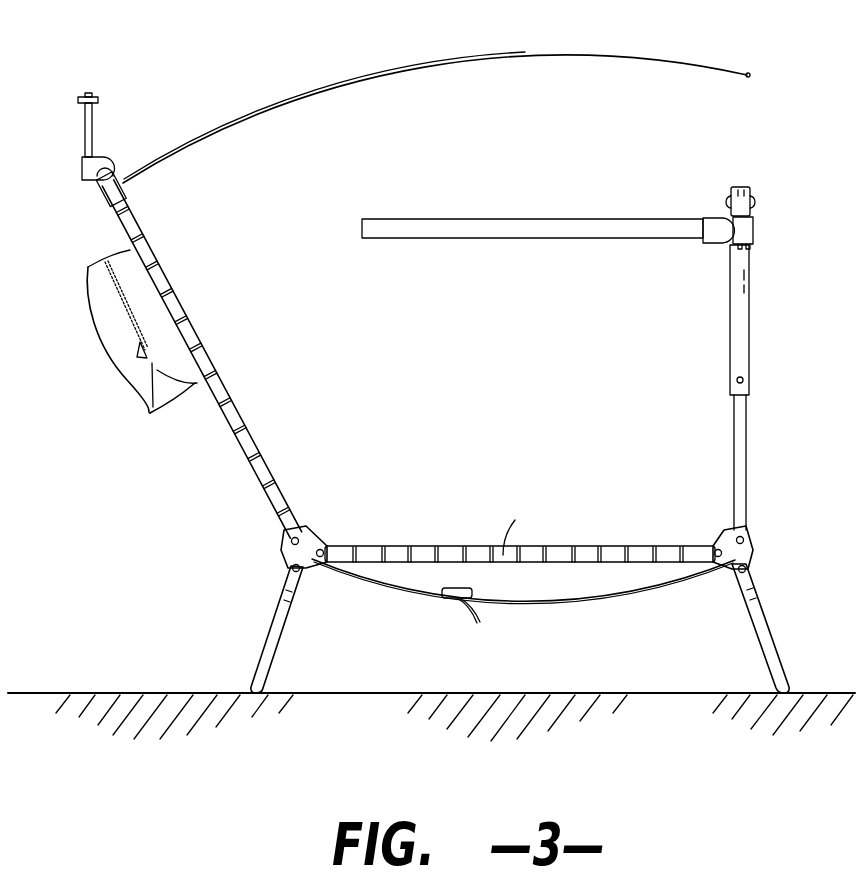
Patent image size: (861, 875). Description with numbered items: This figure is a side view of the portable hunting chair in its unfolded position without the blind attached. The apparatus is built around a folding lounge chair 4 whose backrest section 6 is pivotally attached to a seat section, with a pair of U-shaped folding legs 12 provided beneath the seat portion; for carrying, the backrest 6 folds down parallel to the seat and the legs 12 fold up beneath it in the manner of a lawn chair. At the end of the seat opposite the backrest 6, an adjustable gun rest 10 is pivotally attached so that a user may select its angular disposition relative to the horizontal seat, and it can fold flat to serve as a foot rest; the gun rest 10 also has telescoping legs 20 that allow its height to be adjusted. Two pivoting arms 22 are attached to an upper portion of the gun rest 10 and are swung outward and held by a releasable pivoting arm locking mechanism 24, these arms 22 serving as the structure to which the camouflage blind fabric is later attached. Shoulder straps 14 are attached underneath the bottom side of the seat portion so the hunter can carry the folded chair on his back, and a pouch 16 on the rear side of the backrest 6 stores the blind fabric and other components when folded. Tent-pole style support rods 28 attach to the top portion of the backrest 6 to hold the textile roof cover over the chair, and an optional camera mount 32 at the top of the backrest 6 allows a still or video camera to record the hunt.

The folding lounge chair 4 is at (133, 488).
The backrest section 6 is at (215, 395).
The adjustable gun rest 10 is at (742, 200).
The U-shaped folding legs 12 is at (270, 633).
The shoulder straps 14 is at (545, 600).
The pouch 16 is at (88, 312).
The telescoping legs 20 is at (740, 312).
The pivoting arms 22 is at (472, 220).
The releasable pivoting arm locking mechanism 24 is at (748, 228).
The support rods 28 is at (420, 67).
The camera mount 32 is at (82, 128).